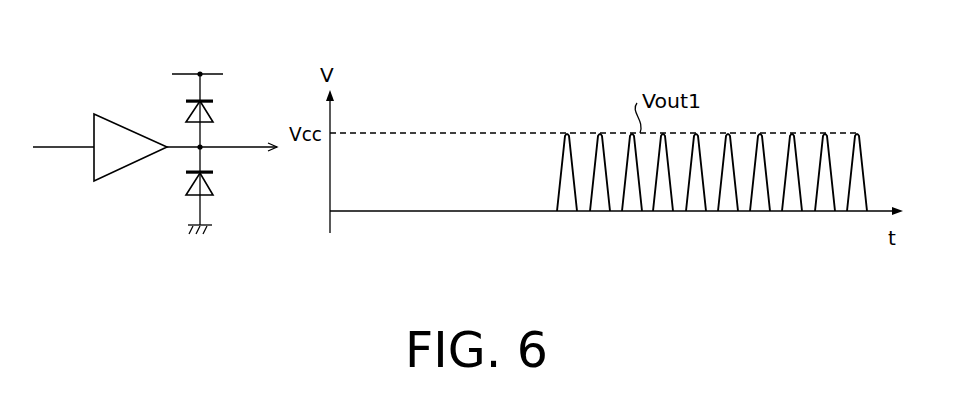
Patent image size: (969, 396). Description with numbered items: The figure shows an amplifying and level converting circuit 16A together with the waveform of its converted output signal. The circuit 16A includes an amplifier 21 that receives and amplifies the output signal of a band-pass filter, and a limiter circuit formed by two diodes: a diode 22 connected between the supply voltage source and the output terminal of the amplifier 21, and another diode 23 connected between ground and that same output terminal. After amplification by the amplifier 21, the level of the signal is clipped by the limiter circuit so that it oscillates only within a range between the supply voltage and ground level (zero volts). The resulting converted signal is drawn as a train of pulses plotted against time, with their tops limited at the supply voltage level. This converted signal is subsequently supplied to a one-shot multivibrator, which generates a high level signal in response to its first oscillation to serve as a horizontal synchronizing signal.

The amplifying and level converting circuit 16A is at (154, 84).
The amplifier 21 is at (121, 168).
The diode 22 is at (213, 112).
The diode 23 is at (213, 186).